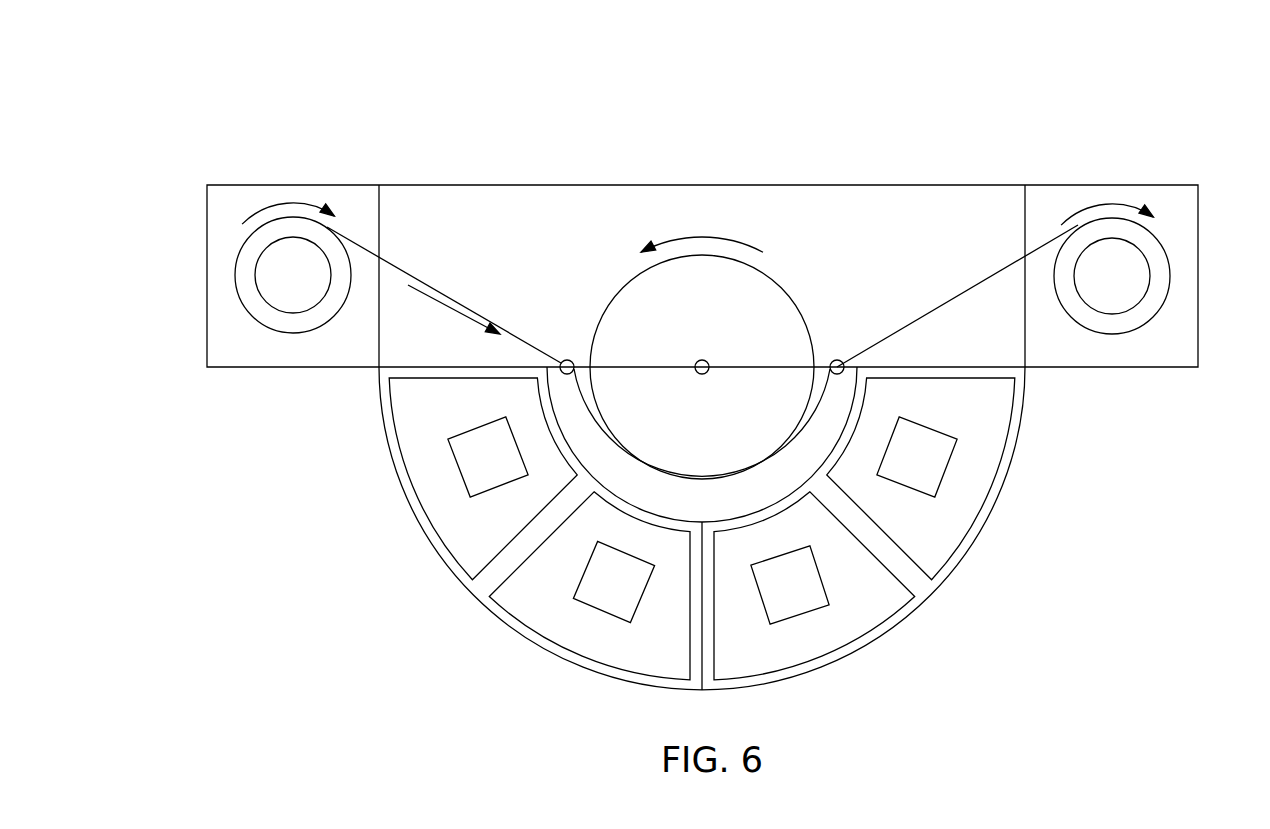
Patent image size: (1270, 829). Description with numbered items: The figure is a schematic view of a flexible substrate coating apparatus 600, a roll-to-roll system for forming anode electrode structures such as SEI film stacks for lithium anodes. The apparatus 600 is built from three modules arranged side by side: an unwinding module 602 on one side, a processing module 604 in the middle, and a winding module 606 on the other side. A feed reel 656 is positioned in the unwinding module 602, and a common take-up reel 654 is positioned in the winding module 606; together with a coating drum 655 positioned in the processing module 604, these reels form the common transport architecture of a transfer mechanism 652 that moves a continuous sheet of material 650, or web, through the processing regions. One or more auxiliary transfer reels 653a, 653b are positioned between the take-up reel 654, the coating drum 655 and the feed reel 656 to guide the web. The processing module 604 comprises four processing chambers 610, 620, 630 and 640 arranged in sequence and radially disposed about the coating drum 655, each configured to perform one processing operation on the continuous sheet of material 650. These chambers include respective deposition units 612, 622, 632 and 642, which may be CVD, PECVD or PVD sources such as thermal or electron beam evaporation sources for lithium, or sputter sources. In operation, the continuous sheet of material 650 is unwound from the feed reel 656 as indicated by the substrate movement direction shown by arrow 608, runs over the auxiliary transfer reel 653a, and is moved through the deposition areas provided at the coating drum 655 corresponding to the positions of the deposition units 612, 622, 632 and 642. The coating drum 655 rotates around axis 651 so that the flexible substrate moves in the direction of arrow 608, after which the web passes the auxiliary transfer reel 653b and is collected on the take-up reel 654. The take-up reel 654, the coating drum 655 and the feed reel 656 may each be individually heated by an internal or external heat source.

The flexible substrate coating apparatus 600 is at (1170, 95).
The transfer mechanism 652 is at (263, 102).
The unwinding module 602 is at (297, 185).
The feed reel 656 is at (232, 317).
The processing module 604 is at (715, 185).
The winding module 606 is at (1105, 185).
The take-up reel 654 is at (1165, 322).
The continuous sheet of material 650 is at (437, 283).
The arrow 608 is at (440, 312).
The auxiliary transfer reel 653a is at (572, 343).
The auxiliary transfer reel 653b is at (833, 343).
The coating drum 655 is at (716, 308).
The axis 651 is at (700, 375).
The processing chamber 610 is at (392, 470).
The deposition unit 612 is at (504, 462).
The processing chamber 620 is at (555, 654).
The deposition unit 622 is at (632, 588).
The processing chamber 630 is at (833, 662).
The deposition unit 632 is at (807, 588).
The processing chamber 640 is at (985, 522).
The deposition unit 642 is at (934, 462).